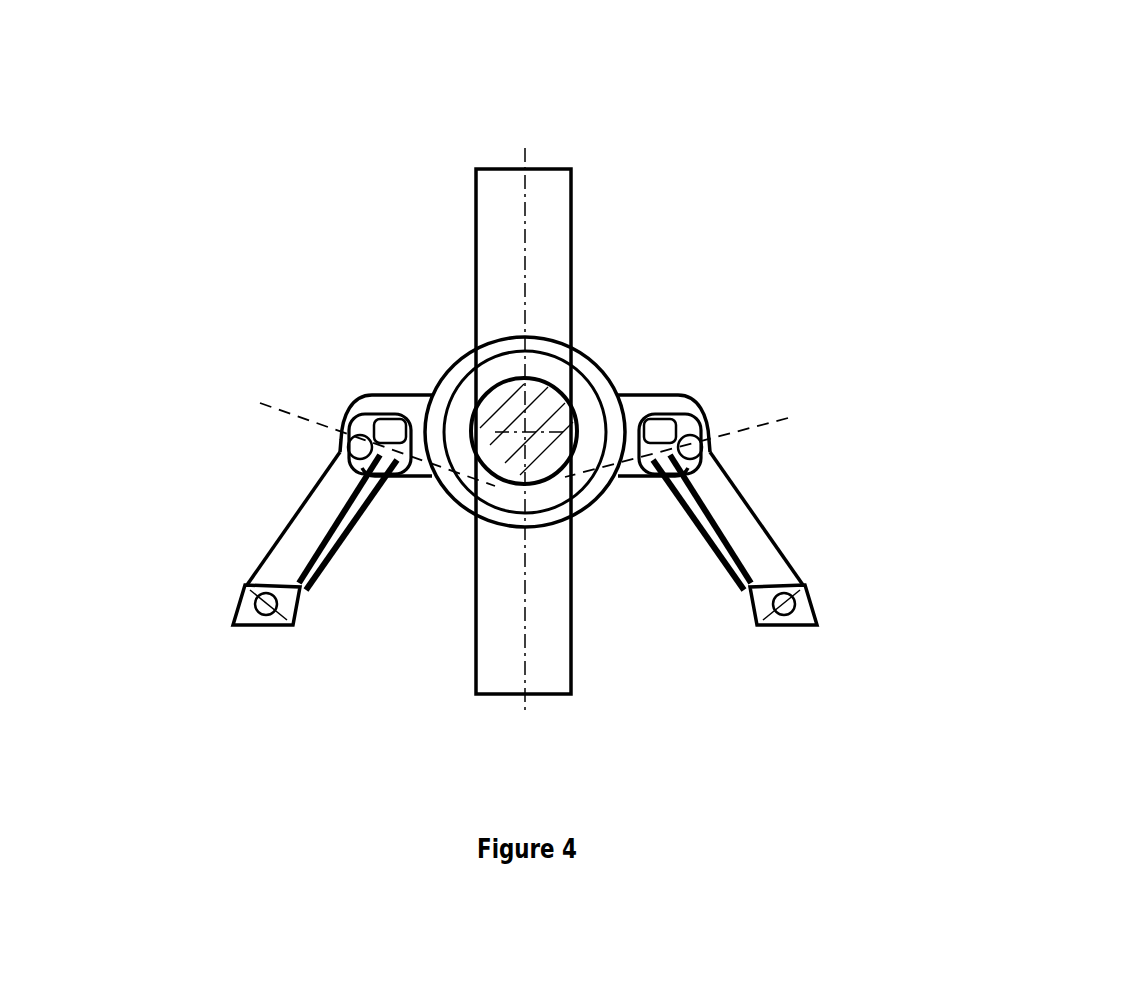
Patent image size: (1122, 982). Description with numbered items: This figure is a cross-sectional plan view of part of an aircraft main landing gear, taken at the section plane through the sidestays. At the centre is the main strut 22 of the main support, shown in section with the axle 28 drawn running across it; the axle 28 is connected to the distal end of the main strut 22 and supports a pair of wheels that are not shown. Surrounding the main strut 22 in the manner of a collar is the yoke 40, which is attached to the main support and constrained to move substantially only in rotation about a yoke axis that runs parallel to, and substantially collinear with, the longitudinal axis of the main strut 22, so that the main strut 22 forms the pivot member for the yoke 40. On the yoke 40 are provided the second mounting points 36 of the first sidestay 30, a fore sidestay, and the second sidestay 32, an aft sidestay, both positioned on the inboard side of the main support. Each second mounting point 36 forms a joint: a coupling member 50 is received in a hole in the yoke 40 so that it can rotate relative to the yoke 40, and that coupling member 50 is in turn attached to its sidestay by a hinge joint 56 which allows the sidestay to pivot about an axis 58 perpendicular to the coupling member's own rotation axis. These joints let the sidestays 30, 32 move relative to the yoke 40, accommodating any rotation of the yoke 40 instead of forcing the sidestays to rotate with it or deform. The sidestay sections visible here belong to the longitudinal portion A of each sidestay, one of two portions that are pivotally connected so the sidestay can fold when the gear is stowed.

The main strut 22 is at (551, 413).
The axle 28 is at (551, 203).
The first sidestay 30 is at (805, 658).
The second sidestay 32 is at (245, 658).
The second mounting point 36 is at (320, 378).
The yoke 40 is at (417, 397).
The coupling member 50 is at (365, 445).
The hinge joint 56 is at (320, 408).
The axis 58 is at (282, 410).
The longitudinal portion A is at (285, 557).